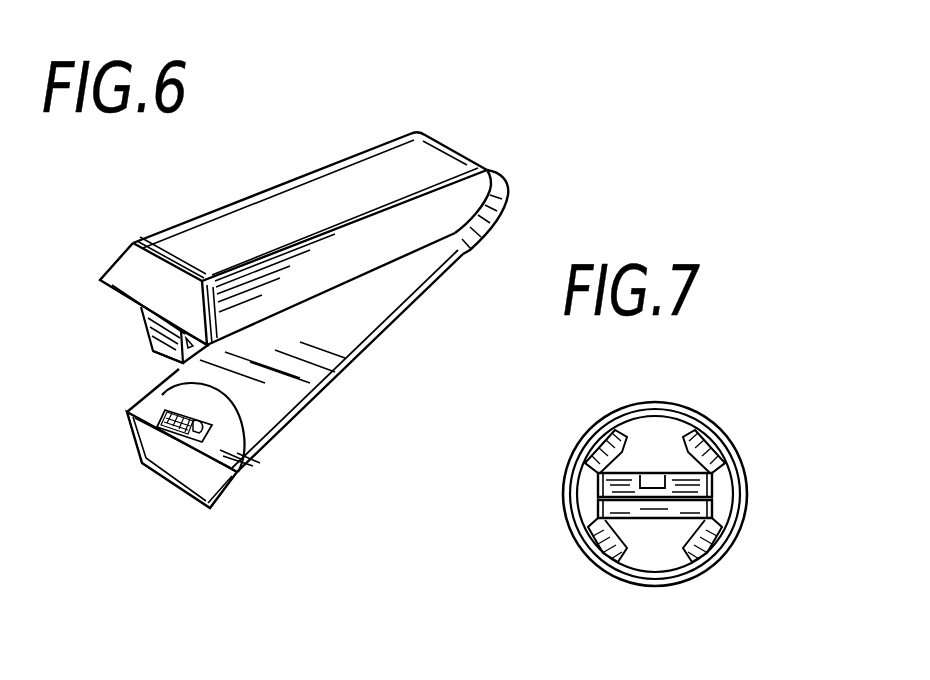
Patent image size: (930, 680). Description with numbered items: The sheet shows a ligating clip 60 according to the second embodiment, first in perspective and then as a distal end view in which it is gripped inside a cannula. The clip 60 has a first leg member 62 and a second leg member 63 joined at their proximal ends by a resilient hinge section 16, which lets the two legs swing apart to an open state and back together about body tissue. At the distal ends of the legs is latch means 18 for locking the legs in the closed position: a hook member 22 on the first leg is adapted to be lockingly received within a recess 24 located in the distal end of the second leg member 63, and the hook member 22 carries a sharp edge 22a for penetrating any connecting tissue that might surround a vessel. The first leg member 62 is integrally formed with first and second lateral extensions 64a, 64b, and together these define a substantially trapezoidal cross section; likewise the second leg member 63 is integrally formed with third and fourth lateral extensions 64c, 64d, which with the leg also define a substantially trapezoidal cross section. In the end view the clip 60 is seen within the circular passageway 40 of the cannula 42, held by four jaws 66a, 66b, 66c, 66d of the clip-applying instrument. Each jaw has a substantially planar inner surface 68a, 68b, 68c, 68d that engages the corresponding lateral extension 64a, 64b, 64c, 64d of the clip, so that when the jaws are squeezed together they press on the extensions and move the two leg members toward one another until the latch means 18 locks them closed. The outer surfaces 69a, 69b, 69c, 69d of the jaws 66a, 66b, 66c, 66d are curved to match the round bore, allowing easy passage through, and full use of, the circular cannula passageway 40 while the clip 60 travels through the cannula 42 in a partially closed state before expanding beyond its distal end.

In FIG. 6, the ligating clip 60 is at (385, 98).
In FIG. 7, the ligating clip 60 is at (648, 443).
In FIG. 6, the first leg member 62 is at (297, 190).
In FIG. 7, the first leg member 62 is at (670, 447).
In FIG. 6, the second leg member 63 is at (343, 343).
In FIG. 7, the second leg member 63 is at (646, 545).
In FIG. 6, the resilient hinge section 16 is at (490, 186).
In FIG. 6, the latch means 18 is at (180, 365).
In FIG. 6, the hook member 22 is at (150, 336).
In FIG. 6, the sharp edge 22a is at (155, 353).
In FIG. 6, the recess 24 is at (168, 430).
In FIG. 6, the first lateral extension 64a is at (122, 272).
In FIG. 7, the first lateral extension 64a is at (598, 481).
In FIG. 6, the second lateral extension 64b is at (393, 233).
In FIG. 7, the second lateral extension 64b is at (712, 482).
In FIG. 6, the third lateral extension 64c is at (237, 476).
In FIG. 7, the third lateral extension 64c is at (603, 522).
In FIG. 6, the fourth lateral extension 64d is at (263, 422).
In FIG. 7, the fourth lateral extension 64d is at (712, 518).
In FIG. 7, the jaw 66a is at (610, 460).
In FIG. 7, the jaw 66b is at (717, 457).
In FIG. 7, the jaw 66c is at (609, 560).
In FIG. 7, the jaw 66d is at (700, 560).
In FIG. 7, the planar inner surface 68a is at (611, 437).
In FIG. 7, the planar inner surface 68b is at (694, 438).
In FIG. 7, the planar inner surface 68c is at (616, 558).
In FIG. 7, the planar inner surface 68d is at (675, 556).
In FIG. 7, the curved outer surface 69a is at (597, 468).
In FIG. 7, the curved outer surface 69b is at (714, 469).
In FIG. 7, the curved outer surface 69c is at (598, 548).
In FIG. 7, the curved outer surface 69d is at (718, 545).
In FIG. 7, the cannula passageway 40 is at (730, 486).
In FIG. 7, the cannula 42 is at (740, 503).